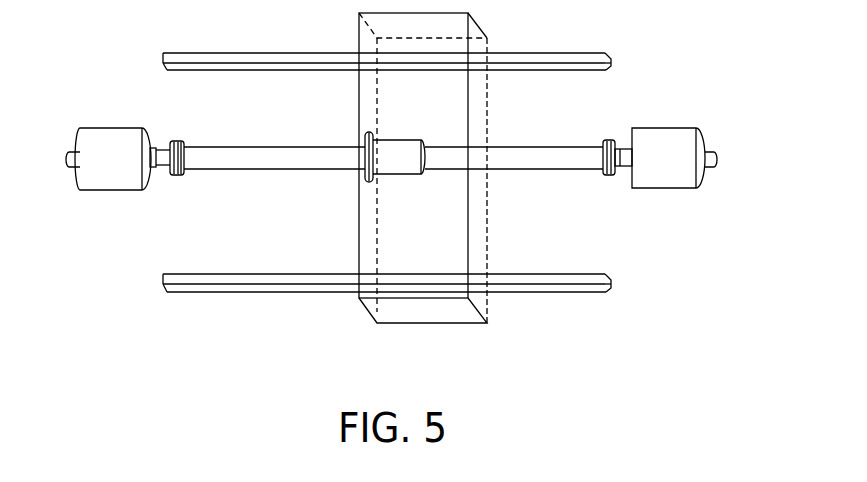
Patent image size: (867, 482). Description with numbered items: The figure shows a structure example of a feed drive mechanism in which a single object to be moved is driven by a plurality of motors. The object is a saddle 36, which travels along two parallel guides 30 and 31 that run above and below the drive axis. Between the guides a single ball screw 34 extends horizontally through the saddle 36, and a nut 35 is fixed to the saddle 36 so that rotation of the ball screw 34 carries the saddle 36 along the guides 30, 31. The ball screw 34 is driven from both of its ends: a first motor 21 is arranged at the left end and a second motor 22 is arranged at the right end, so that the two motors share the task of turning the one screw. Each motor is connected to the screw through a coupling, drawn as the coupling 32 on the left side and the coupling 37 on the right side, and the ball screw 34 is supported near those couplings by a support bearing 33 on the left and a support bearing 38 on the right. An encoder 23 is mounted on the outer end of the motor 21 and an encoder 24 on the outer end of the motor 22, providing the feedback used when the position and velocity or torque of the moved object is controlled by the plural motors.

The motor 21 is at (128, 128).
The motor 22 is at (670, 124).
The Encoder 23 is at (63, 152).
The Encoder 24 is at (710, 170).
The guide 30 is at (263, 53).
The guide 31 is at (237, 293).
The Coupling 32 is at (170, 141).
The bearing 33 is at (178, 178).
The ball screw 34 is at (240, 160).
The nut 35 is at (398, 148).
The saddle 36 is at (418, 310).
The Coupling 37 is at (621, 142).
The bearing 38 is at (603, 176).